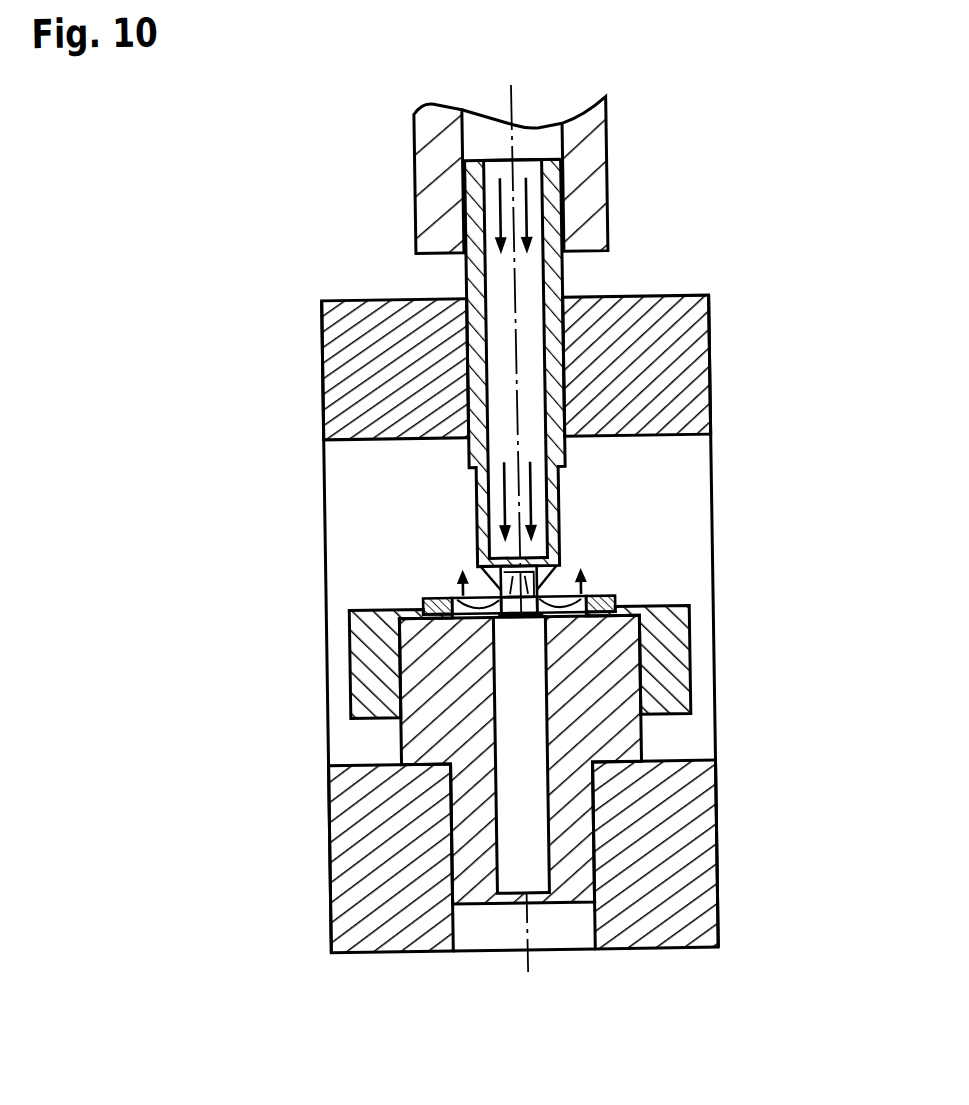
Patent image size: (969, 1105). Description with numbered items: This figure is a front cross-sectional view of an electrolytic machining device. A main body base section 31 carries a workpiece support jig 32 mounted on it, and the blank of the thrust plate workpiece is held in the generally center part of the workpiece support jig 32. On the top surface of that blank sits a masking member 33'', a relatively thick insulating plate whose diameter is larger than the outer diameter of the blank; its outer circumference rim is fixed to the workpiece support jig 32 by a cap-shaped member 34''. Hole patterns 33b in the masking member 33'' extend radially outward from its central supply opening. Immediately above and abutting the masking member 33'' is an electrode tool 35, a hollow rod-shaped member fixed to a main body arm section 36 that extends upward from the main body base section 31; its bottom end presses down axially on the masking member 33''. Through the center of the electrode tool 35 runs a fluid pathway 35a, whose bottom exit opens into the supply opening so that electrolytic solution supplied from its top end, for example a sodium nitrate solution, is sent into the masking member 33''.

The main body arm section 36 is at (715, 366).
The electrode tool 35 is at (564, 508).
The fluid pathway 35a is at (492, 395).
The masking member 33'' is at (373, 555).
The hole patterns 33b is at (658, 513).
The cap-shaped member 34'' is at (610, 643).
The workpiece support jig 32 is at (638, 740).
The main body base section 31 is at (715, 880).